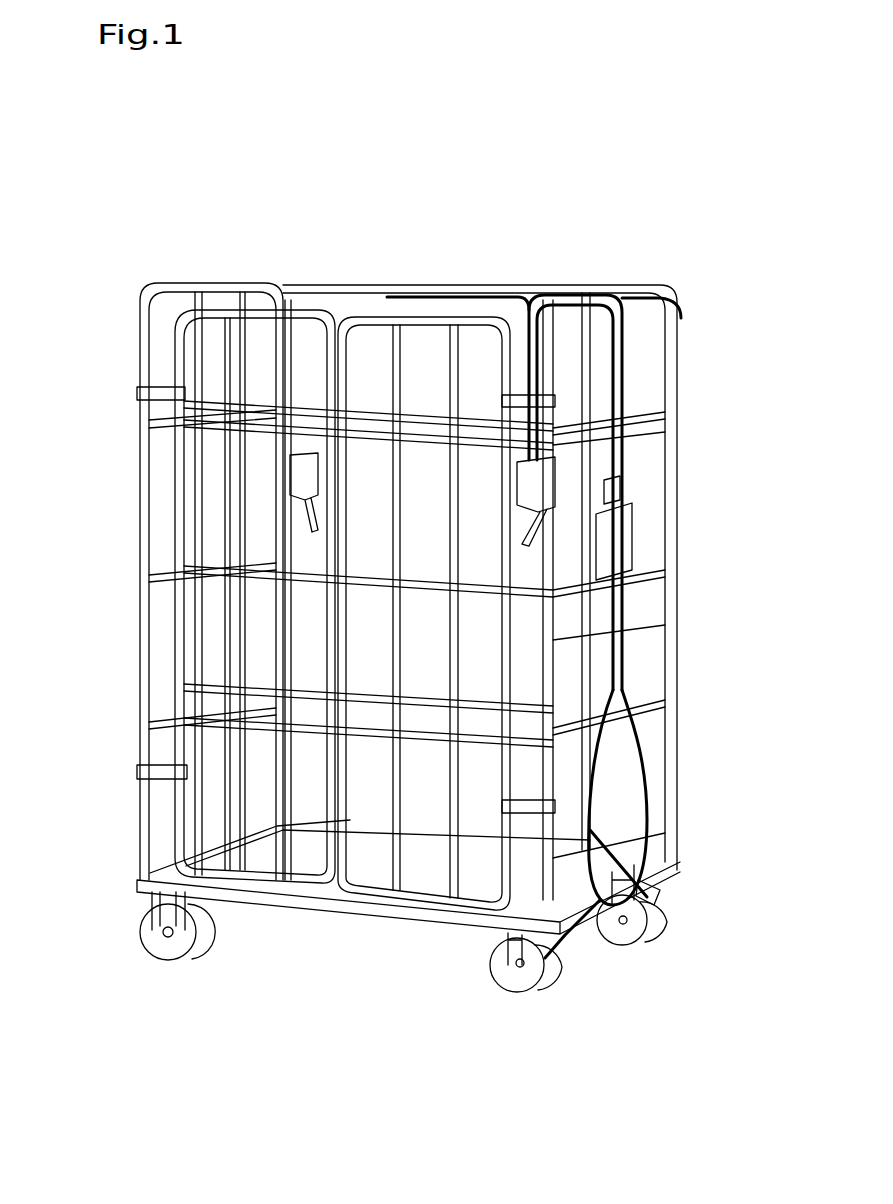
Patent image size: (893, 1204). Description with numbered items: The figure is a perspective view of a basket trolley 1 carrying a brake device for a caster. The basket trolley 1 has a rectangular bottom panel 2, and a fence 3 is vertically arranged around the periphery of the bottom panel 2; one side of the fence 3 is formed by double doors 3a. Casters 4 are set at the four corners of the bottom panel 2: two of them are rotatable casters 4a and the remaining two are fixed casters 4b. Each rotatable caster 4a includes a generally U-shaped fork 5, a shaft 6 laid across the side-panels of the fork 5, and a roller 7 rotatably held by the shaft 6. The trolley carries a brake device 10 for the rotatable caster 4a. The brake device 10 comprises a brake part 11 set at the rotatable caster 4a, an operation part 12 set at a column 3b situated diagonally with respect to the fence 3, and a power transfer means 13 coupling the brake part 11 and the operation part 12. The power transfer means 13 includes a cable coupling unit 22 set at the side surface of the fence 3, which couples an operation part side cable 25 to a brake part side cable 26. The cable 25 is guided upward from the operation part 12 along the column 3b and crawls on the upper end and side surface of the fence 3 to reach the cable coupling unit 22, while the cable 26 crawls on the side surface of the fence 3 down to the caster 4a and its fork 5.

The basket trolley 1 is at (278, 278).
The bottom panel 2 is at (327, 907).
The fence 3 is at (397, 556).
The double doors 3a is at (385, 312).
The column 3b is at (292, 610).
The caster 4 is at (445, 966).
The rotatable caster 4a is at (610, 966).
The fixed caster 4b is at (168, 938).
The fork 5 is at (508, 950).
The shaft 6 is at (517, 972).
The roller 7 is at (533, 982).
The brake device 10 is at (410, 618).
The brake part 11 is at (663, 897).
The operation part 12 is at (282, 477).
The power transfer means 13 is at (624, 491).
The cable coupling unit 22 is at (612, 530).
The operation part side cable 25 is at (566, 302).
The brake part side cable 26 is at (620, 860).